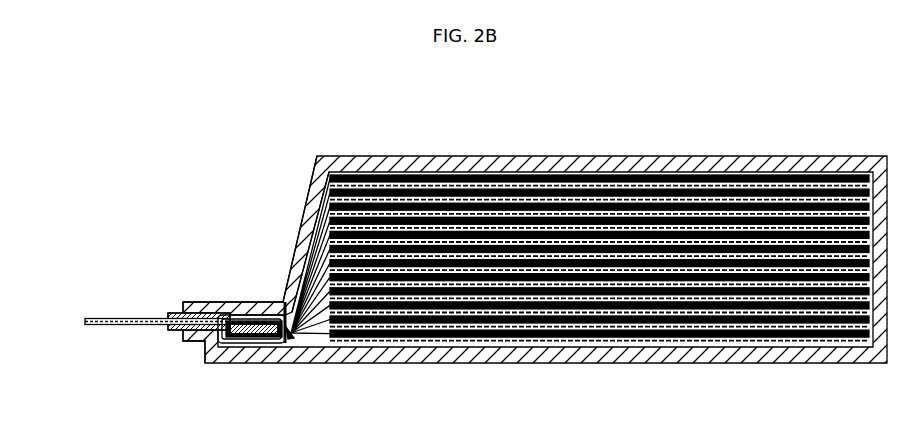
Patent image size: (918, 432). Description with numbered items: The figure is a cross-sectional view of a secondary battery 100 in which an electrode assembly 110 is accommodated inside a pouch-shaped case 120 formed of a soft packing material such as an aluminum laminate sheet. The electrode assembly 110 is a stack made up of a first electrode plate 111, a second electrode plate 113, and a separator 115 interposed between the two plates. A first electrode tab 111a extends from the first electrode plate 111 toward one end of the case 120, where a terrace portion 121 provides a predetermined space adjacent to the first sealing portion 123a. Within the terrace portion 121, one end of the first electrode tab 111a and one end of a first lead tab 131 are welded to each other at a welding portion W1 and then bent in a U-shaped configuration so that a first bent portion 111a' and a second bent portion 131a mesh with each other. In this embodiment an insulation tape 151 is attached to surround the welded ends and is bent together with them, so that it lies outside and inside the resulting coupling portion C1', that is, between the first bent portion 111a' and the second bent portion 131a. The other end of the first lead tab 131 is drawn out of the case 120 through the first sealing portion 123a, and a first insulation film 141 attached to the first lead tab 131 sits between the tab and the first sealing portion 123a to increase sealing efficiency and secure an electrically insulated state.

The secondary battery 100 is at (103, 146).
The electrode assembly 110 is at (580, 263).
The first electrode plate 111 is at (545, 179).
The second electrode plate 113 is at (714, 183).
The separator 115 is at (635, 183).
The case 120 is at (801, 165).
The terrace portion 121 is at (267, 223).
The first sealing portion 123a is at (250, 305).
The first lead tab 131 is at (124, 318).
The second bent portion 131a is at (236, 305).
The first insulation film 141 is at (161, 330).
The insulation tape 151 is at (279, 312).
The first electrode tab 111a is at (343, 305).
The first bent portion 111a' is at (298, 378).
The welding portion W1 is at (245, 345).
The coupling portion C1' is at (175, 381).